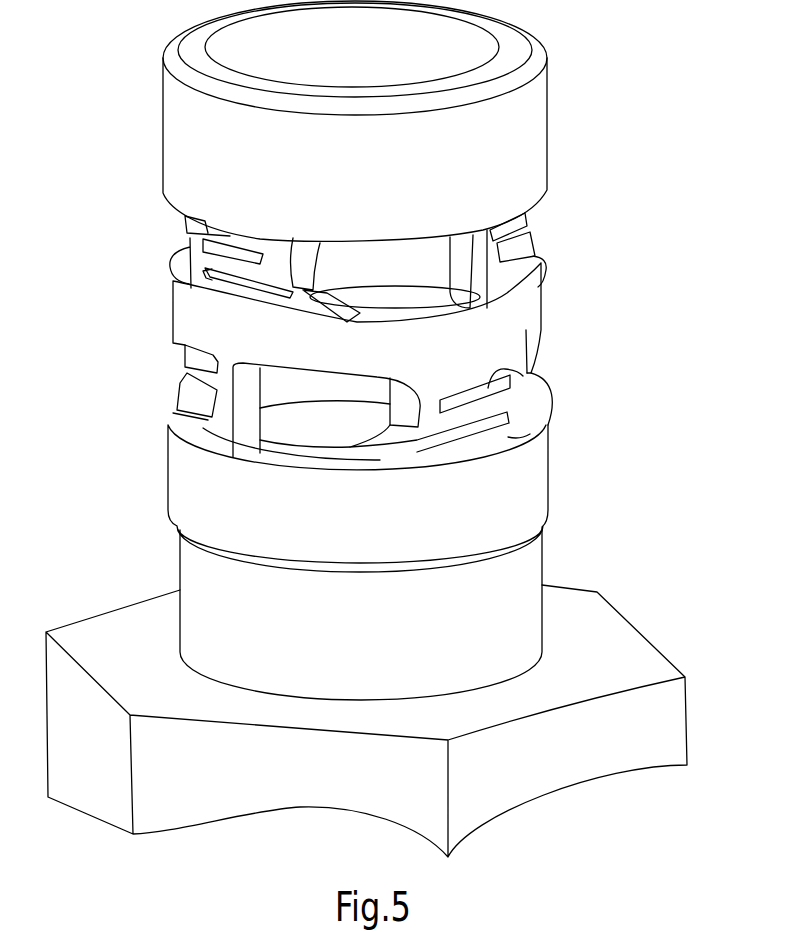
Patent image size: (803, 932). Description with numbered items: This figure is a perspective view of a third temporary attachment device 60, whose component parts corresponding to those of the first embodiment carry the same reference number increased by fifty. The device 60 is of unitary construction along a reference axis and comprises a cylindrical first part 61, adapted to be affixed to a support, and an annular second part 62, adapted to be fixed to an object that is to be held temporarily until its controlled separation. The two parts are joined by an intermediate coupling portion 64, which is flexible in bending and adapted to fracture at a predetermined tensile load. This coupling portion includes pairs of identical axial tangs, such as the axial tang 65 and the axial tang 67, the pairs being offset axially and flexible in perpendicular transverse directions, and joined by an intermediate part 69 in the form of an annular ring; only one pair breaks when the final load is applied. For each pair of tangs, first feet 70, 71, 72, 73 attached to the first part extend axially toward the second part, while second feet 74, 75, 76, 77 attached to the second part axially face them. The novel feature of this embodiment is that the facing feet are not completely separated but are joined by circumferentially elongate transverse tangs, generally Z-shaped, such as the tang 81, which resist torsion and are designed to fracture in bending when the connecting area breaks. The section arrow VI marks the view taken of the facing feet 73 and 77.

The temporary attachment device 60 is at (652, 190).
The first part 61 is at (168, 441).
The second part 62 is at (177, 113).
The intermediate coupling portion 64 is at (585, 307).
The axial tang 65 is at (483, 263).
The axial tang 67 is at (227, 425).
The intermediate part 69 is at (172, 303).
The first foot 70 is at (190, 285).
The first foot 71 is at (527, 235).
The first foot 72 is at (180, 393).
The first foot 73 is at (547, 427).
The second foot 74 is at (208, 235).
The second foot 75 is at (528, 233).
The second foot 76 is at (182, 360).
The second foot 77 is at (465, 373).
The tang 81 is at (523, 372).
The section view indicator VI is at (525, 455).